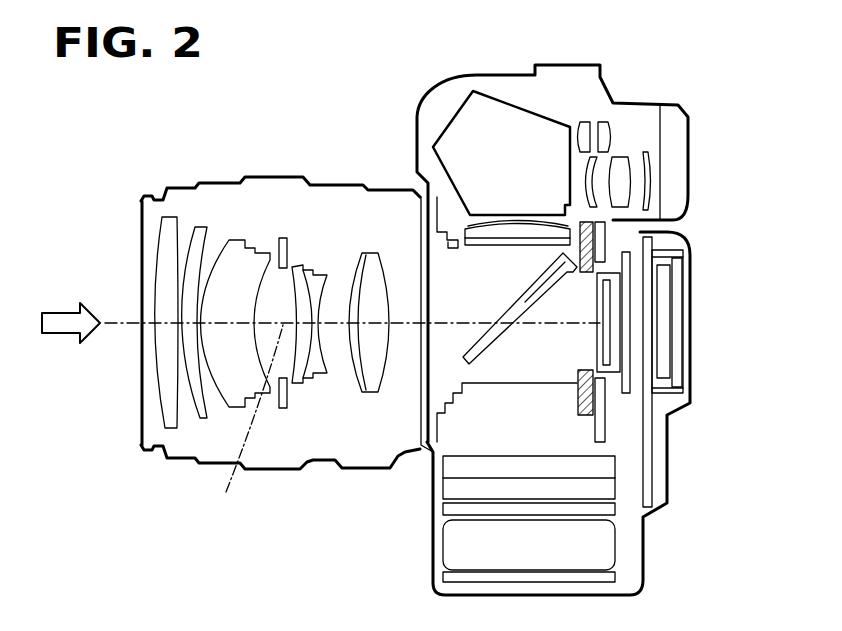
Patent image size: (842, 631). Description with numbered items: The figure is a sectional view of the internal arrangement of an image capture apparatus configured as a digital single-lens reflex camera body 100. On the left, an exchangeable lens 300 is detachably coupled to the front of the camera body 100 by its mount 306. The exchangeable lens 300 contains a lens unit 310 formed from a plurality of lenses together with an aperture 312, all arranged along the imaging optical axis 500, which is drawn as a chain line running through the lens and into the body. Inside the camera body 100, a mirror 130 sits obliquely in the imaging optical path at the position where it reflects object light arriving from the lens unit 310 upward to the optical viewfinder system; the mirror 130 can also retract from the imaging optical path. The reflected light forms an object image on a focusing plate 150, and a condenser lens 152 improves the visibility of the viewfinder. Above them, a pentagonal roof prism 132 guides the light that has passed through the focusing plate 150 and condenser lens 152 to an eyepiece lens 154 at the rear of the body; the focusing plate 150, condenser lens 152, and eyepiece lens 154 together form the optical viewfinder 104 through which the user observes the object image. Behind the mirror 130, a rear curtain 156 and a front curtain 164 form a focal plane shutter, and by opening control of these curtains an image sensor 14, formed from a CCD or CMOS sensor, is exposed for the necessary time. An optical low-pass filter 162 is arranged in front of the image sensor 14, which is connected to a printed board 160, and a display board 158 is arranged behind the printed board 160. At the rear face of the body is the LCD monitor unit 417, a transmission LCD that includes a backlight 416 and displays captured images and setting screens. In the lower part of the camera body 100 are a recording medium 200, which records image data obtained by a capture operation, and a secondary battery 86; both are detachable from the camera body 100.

The camera body 100 is at (586, 64).
The exchangeable lens 300 is at (265, 184).
The lens unit 310 is at (163, 402).
The aperture 312 is at (285, 403).
The imaging optical axis 500 is at (245, 421).
The mount 306 is at (420, 418).
The mirror 130 is at (480, 343).
The pentagonal roof prism 132 is at (508, 100).
The focusing plate 150 is at (482, 243).
The condenser lens 152 is at (503, 228).
The eyepiece lens 154 is at (650, 160).
The optical viewfinder 104 is at (683, 157).
The image sensor 14 is at (590, 252).
The rear curtain 156 is at (610, 290).
The display board 158 is at (653, 328).
The printed board 160 is at (628, 300).
The optical low-pass filter 162 is at (610, 352).
The backlight 416 is at (663, 305).
The LCD monitor unit 417 is at (678, 355).
The front curtain 164 is at (595, 397).
The recording medium 200 is at (600, 465).
The secondary battery 86 is at (600, 547).